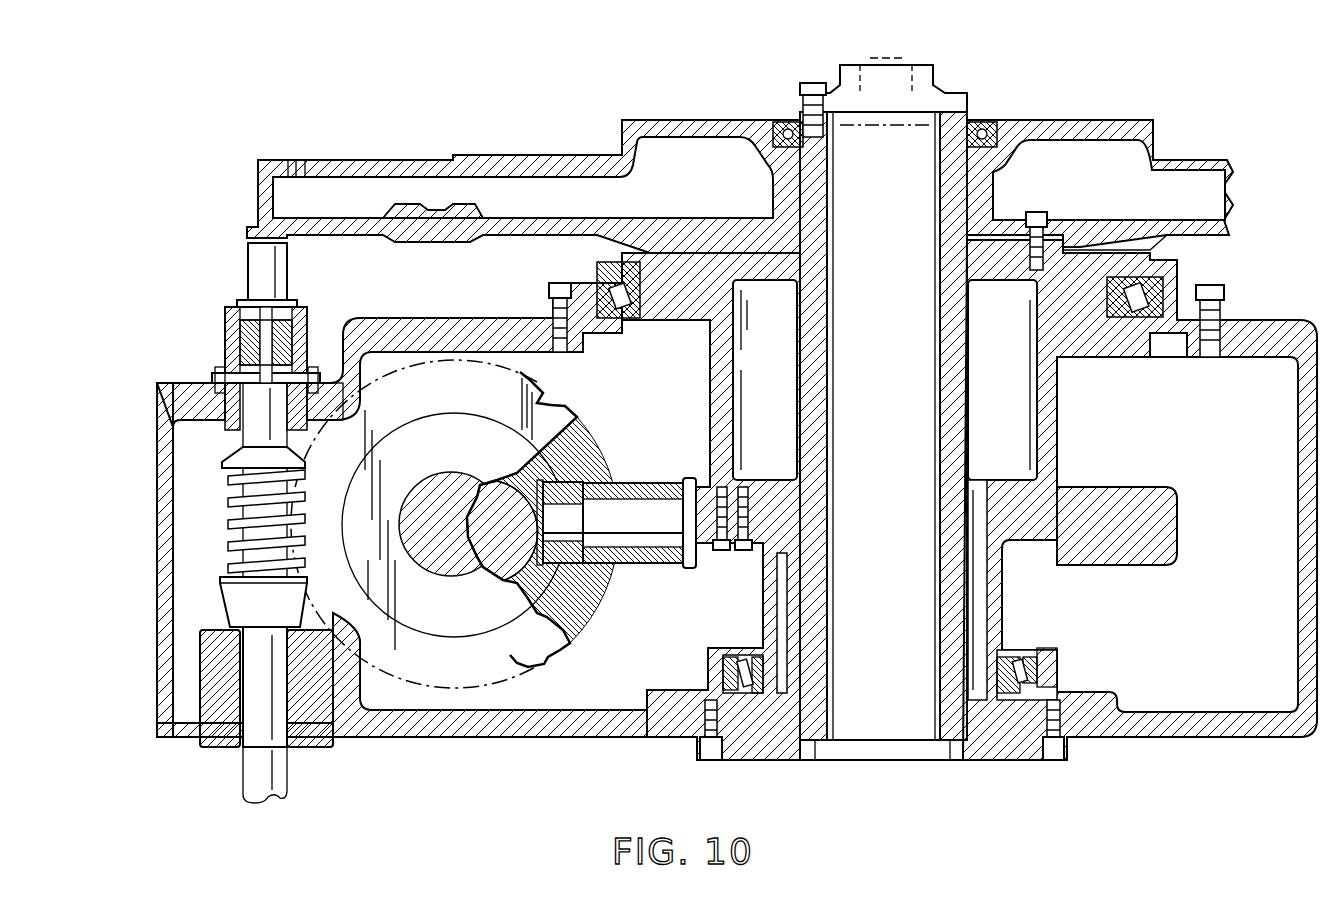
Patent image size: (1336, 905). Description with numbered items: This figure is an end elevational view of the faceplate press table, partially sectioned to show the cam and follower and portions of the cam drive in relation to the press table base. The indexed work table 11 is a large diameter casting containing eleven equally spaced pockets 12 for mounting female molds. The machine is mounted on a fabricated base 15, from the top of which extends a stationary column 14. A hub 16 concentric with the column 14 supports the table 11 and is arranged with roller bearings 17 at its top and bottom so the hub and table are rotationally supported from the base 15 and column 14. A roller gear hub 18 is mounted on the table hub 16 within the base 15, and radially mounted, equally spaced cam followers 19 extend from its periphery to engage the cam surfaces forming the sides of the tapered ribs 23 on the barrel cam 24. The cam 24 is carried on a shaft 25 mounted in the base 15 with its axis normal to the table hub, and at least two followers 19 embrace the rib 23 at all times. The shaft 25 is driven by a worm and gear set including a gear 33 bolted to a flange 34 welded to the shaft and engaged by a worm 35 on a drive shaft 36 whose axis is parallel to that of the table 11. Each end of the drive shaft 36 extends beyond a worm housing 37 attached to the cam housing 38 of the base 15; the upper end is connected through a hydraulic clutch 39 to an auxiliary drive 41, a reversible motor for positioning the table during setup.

The indexed work table 11 is at (556, 155).
The pockets 12 is at (316, 172).
The stationary column 14 is at (834, 395).
The base 15 is at (1098, 737).
The hub 16 is at (731, 416).
The roller bearings 17 is at (722, 668).
The roller gear hub 18 is at (663, 484).
The cam followers 19 is at (570, 481).
The tapered ribs 23 is at (578, 572).
The barrel cam 24 is at (546, 598).
The shaft 25 is at (454, 525).
The gear 33 is at (336, 545).
The flange 34 is at (473, 617).
The worm 35 is at (230, 510).
The drive shaft 36 is at (252, 760).
The worm housing 37 is at (160, 585).
The cam housing 38 is at (402, 335).
The hydraulic clutch 39 is at (250, 372).
The auxiliary drive 41 is at (216, 323).